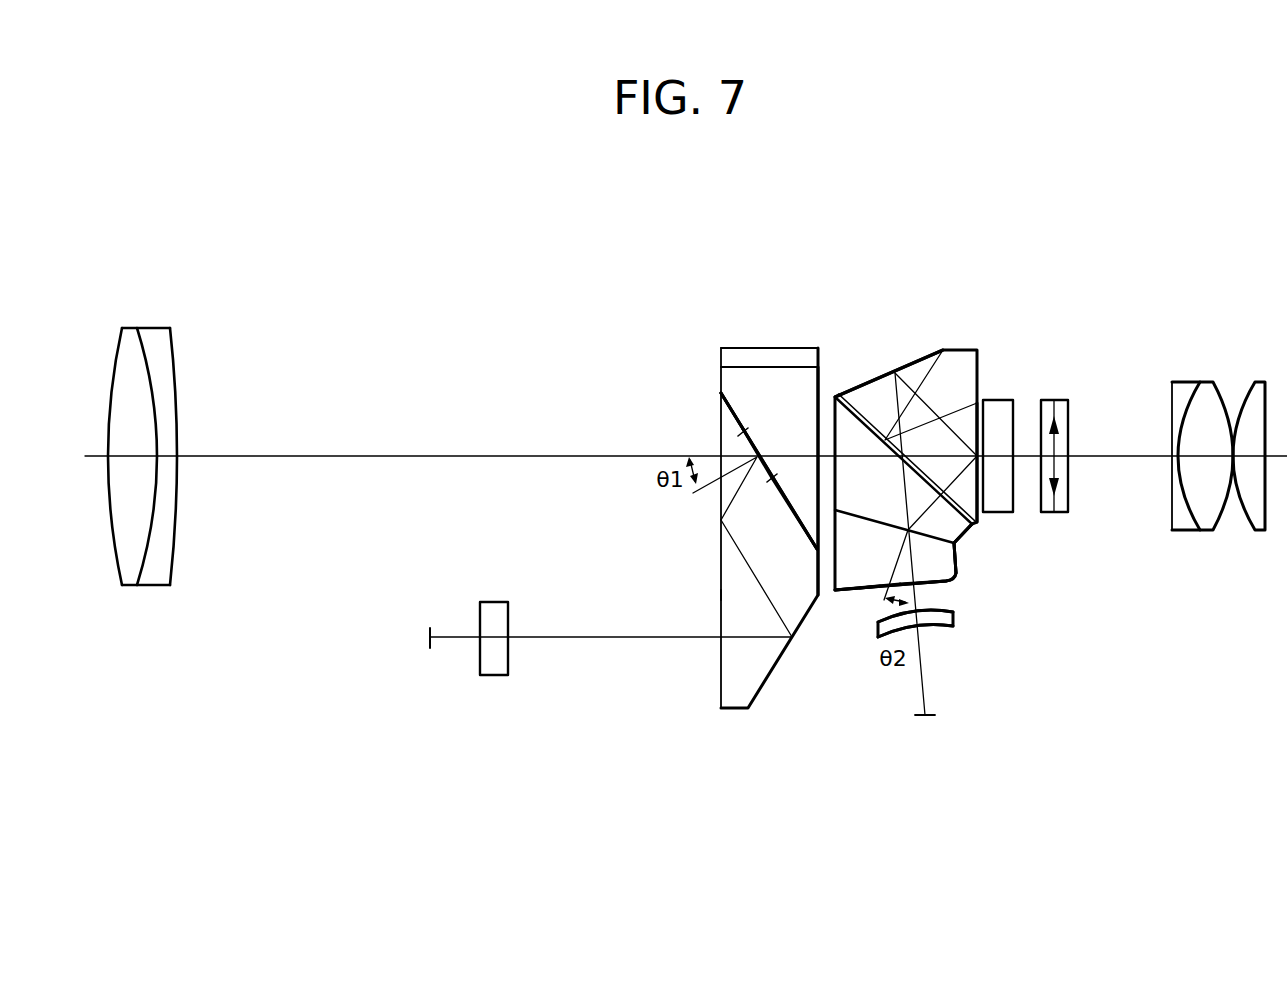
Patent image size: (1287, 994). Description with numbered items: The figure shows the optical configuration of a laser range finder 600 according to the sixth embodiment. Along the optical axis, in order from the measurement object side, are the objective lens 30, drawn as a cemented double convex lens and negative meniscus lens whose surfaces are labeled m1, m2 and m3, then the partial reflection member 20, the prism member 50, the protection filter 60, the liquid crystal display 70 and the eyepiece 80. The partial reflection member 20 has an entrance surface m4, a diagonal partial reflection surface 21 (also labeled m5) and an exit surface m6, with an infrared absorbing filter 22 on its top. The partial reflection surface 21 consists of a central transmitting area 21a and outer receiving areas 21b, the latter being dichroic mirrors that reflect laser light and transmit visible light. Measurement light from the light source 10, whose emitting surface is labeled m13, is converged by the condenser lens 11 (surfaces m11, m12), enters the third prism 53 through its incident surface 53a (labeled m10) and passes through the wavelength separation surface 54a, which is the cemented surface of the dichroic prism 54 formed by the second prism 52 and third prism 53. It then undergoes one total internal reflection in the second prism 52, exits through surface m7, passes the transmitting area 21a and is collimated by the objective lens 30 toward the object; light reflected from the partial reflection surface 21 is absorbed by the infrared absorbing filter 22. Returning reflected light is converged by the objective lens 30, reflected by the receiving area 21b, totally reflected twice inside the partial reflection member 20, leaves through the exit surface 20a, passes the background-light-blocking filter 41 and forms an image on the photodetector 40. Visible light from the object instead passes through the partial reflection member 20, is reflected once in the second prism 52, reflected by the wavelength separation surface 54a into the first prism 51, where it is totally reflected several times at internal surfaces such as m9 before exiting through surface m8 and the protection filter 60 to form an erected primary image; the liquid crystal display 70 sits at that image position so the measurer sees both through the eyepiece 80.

The laser range finder 600 is at (1096, 294).
The objective lens 30 is at (177, 322).
The lens surface m1 is at (113, 560).
The lens surface m2 is at (140, 563).
The lens surface m3 is at (175, 565).
The photodetector 40 is at (430, 628).
The background-light-blocking filter 41 is at (494, 602).
The partial reflection member 20 is at (760, 693).
The exit surface 20a is at (721, 669).
The prism entrance surface m4 is at (721, 503).
The reflecting surface m5 is at (752, 446).
The prism exit surface m6 is at (821, 395).
The infrared absorbing filter 22 is at (784, 348).
The partial reflection surface 21 is at (632, 362).
The transmitting area 21a is at (741, 437).
The receiving area 21b is at (728, 406).
The prism member 50 is at (956, 340).
The prism entrance surface m7 is at (836, 396).
The first prism 51 is at (895, 373).
The prism exit surface m8 is at (973, 526).
The internal surface m9 is at (875, 521).
The dichroic prism 54 is at (1053, 550).
The second prism 52 is at (963, 543).
The third prism 53 is at (958, 576).
The wavelength separation surface 54a is at (930, 586).
The incident surface 53a is at (853, 590).
The prism surface m10 is at (870, 590).
The light source 10 is at (922, 721).
The display surface m13 is at (938, 716).
The condenser lens 11 is at (957, 623).
The lens surface m11 is at (957, 617).
The lens surface m12 is at (935, 627).
The protection filter 60 is at (1003, 400).
The liquid crystal display 70 is at (1060, 400).
The eyepiece 80 is at (1272, 374).